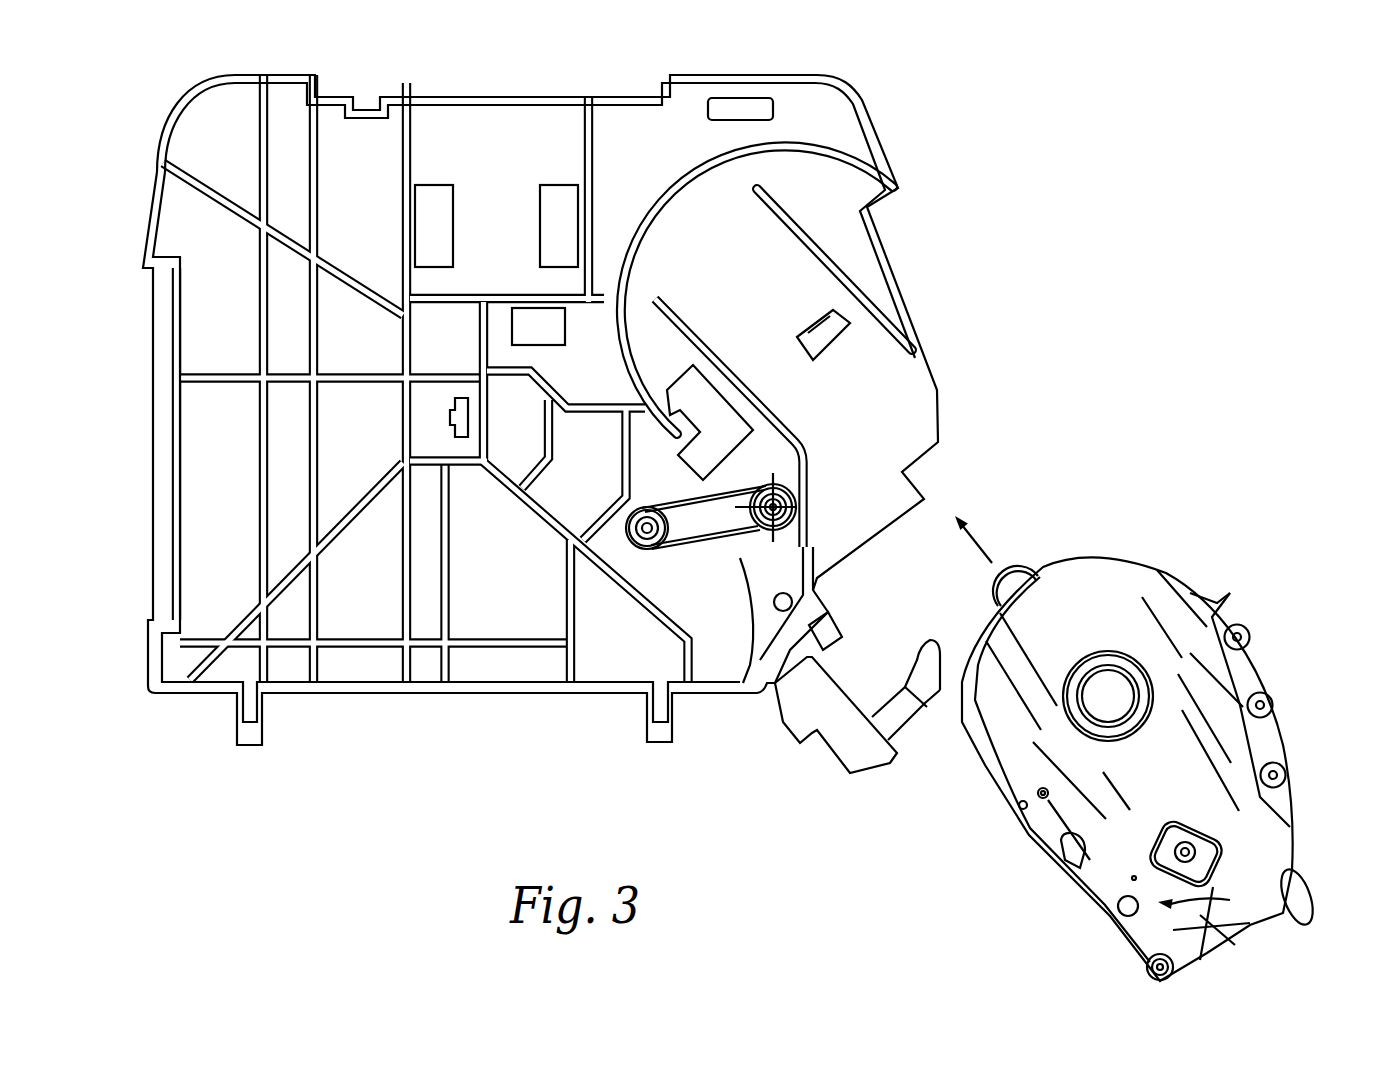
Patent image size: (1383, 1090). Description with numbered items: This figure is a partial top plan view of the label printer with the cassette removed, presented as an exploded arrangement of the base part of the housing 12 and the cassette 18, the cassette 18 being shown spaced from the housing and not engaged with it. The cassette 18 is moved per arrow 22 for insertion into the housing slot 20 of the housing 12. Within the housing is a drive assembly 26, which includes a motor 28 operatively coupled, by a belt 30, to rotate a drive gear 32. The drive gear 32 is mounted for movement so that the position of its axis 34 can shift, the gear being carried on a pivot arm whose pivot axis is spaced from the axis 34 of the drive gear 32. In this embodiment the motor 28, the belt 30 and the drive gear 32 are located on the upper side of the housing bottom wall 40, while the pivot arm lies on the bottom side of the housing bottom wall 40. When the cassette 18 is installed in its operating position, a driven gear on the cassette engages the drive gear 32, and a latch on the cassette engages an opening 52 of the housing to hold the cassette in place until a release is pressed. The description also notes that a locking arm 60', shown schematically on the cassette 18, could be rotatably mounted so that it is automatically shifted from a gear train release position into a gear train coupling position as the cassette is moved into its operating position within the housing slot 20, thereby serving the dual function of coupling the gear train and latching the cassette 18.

The housing 12 is at (553, 447).
The cassette 18 is at (1166, 769).
The housing slot 20 is at (927, 304).
The arrow 22 is at (982, 538).
The drive assembly 26 is at (697, 555).
The motor 28 is at (637, 543).
The belt 30 is at (733, 542).
The drive gear 32 is at (795, 497).
The axis 34 is at (793, 487).
The housing bottom wall 40 is at (366, 602).
The opening 52 is at (818, 330).
The arm 60' is at (1235, 900).